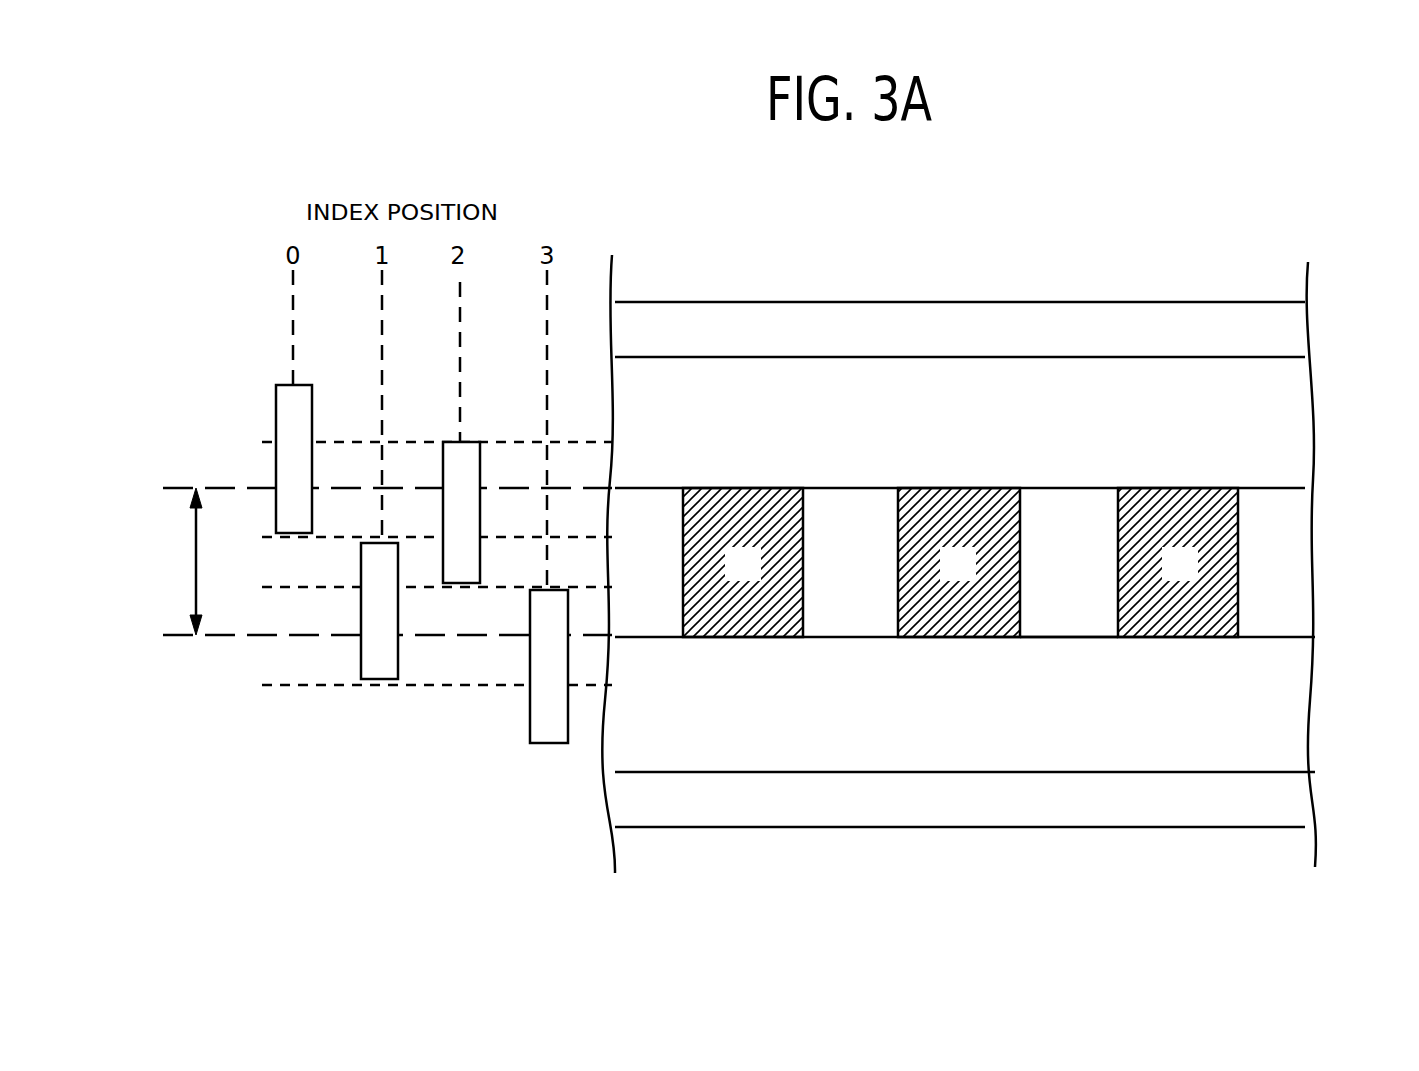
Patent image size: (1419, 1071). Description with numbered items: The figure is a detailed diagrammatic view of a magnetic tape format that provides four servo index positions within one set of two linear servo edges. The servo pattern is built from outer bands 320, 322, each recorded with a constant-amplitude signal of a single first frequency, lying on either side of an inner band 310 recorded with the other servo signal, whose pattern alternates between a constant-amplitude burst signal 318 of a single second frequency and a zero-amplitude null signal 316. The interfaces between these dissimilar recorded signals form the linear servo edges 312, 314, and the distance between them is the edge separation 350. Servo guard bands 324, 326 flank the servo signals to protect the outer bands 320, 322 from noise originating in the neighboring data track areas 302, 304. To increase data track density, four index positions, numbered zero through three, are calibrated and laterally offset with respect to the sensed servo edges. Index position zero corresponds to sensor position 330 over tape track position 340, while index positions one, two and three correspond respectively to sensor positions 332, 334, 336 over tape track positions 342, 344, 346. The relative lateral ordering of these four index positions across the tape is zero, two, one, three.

The data track area 302 is at (1300, 272).
The data track area 304 is at (1308, 850).
The inner band 310 is at (1051, 571).
The linear servo edge 312 is at (1070, 488).
The linear servo edge 314 is at (1063, 637).
The null signal 316 is at (842, 637).
The burst signal 318 is at (757, 488).
The outer band 320 is at (1302, 408).
The outer band 322 is at (1308, 703).
The servo guard band 324 is at (1302, 326).
The servo guard band 326 is at (1308, 798).
The sensor position 330 is at (277, 384).
The sensor position 332 is at (380, 665).
The sensor position 334 is at (445, 441).
The sensor position 336 is at (548, 728).
The tape track position 340 is at (510, 438).
The tape track position 342 is at (343, 520).
The tape track position 344 is at (312, 590).
The tape track position 346 is at (470, 685).
The edge separation 350 is at (196, 565).